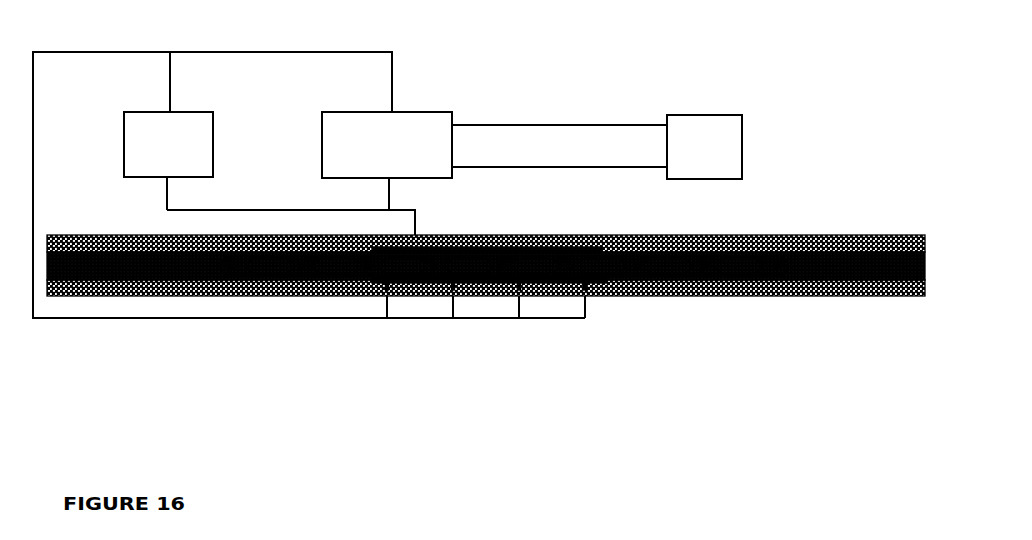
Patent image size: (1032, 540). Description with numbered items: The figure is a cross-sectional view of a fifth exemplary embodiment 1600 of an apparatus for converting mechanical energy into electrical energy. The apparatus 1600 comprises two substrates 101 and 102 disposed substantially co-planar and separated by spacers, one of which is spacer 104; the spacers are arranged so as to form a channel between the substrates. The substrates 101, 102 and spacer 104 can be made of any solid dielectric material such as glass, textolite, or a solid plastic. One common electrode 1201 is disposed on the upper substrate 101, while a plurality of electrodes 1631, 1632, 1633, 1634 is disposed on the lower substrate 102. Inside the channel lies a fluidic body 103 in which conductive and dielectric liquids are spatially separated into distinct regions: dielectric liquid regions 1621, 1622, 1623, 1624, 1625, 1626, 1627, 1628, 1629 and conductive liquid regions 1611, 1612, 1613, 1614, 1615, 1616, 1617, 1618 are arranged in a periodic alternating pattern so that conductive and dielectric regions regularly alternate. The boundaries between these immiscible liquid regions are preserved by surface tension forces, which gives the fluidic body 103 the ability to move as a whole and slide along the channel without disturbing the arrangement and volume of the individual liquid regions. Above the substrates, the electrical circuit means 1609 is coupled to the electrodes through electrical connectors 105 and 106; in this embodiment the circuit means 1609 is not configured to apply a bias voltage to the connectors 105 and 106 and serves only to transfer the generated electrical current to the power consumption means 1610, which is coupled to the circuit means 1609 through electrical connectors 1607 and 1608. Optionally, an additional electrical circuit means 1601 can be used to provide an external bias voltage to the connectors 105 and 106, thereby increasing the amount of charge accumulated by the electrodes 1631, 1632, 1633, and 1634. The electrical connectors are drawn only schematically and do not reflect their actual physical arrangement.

The fifth exemplary embodiment of apparatus 1600 is at (842, 63).
The electrical connector 106 is at (45, 148).
The additional electrical circuit means 1601 is at (222, 130).
The electrical circuit means 1609 is at (430, 102).
The electrical connector 1607 is at (532, 118).
The electrical connector 1608 is at (530, 157).
The power consumption means 1610 is at (705, 107).
The electrical connector 105 is at (422, 210).
The substrate 101 is at (798, 228).
The spacer 104 is at (822, 267).
The substrate 102 is at (92, 302).
The fluidic body 103 is at (212, 277).
The common electrode 1201 is at (548, 246).
The electrode 1631 is at (387, 285).
The electrode 1632 is at (453, 285).
The electrode 1633 is at (519, 285).
The electrode 1634 is at (585, 285).
The conductive liquid region 1611 is at (270, 272).
The conductive liquid region 1612 is at (337, 272).
The conductive liquid region 1613 is at (403, 272).
The conductive liquid region 1614 is at (469, 272).
The conductive liquid region 1615 is at (535, 272).
The conductive liquid region 1616 is at (601, 272).
The conductive liquid region 1617 is at (668, 272).
The conductive liquid region 1618 is at (738, 272).
The dielectric liquid region 1621 is at (233, 268).
The dielectric liquid region 1622 is at (302, 268).
The dielectric liquid region 1623 is at (369, 268).
The dielectric liquid region 1624 is at (436, 268).
The dielectric liquid region 1625 is at (503, 268).
The dielectric liquid region 1626 is at (571, 268).
The dielectric liquid region 1627 is at (638, 268).
The dielectric liquid region 1628 is at (706, 268).
The dielectric liquid region 1629 is at (778, 268).